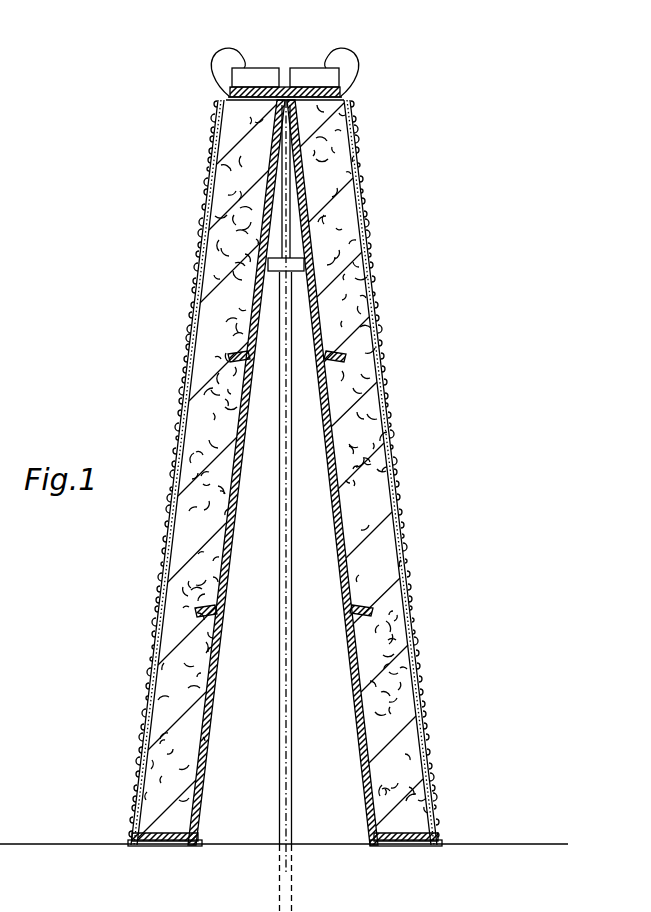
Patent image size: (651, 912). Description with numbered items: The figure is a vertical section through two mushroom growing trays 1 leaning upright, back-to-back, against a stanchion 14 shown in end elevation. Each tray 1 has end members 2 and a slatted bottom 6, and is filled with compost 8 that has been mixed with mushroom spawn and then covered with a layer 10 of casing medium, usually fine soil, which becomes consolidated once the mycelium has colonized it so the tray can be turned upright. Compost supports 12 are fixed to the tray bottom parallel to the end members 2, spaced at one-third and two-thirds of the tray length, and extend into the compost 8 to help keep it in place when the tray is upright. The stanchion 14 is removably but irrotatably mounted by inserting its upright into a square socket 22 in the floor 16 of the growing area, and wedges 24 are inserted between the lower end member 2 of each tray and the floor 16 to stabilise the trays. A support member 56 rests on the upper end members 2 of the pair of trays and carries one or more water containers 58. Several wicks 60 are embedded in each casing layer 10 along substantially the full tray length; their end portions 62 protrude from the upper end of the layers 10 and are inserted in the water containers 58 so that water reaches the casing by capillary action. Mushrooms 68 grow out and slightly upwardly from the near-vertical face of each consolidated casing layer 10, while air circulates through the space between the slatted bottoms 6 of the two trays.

The mushroom growing tray 1 is at (384, 264).
The end member 2 is at (155, 845).
The slatted bottom 6 is at (325, 433).
The compost 8 is at (364, 469).
The layer of casing medium 10 is at (381, 354).
The compost support 12 is at (232, 358).
The stanchion 14 is at (292, 706).
The floor 16 is at (497, 842).
The socket 22 is at (288, 890).
The wedge 24 is at (135, 840).
The support member 56 is at (352, 110).
The water container 58 is at (258, 72).
The wick 60 is at (165, 530).
The end portion of wick 62 is at (229, 52).
The mushroom 68 is at (207, 224).